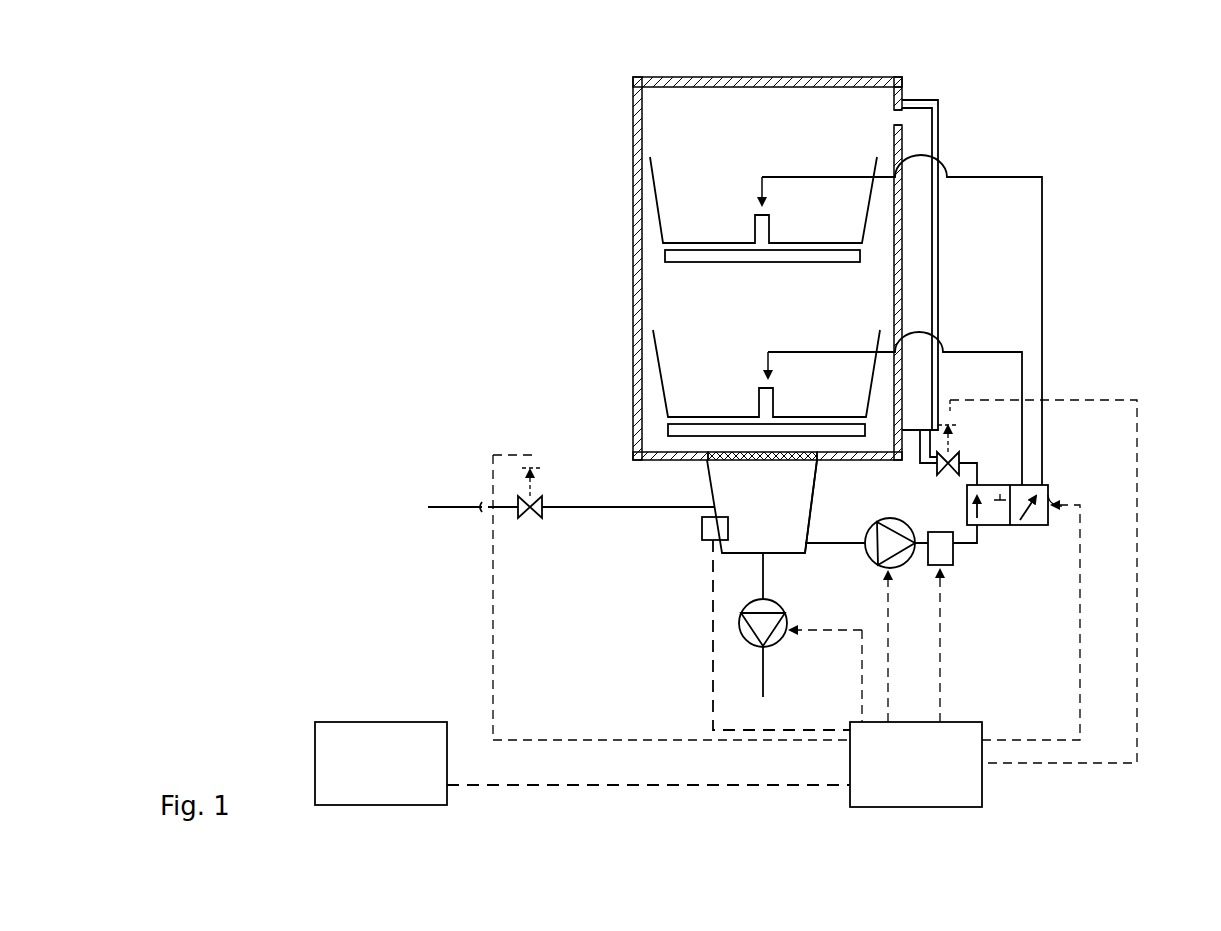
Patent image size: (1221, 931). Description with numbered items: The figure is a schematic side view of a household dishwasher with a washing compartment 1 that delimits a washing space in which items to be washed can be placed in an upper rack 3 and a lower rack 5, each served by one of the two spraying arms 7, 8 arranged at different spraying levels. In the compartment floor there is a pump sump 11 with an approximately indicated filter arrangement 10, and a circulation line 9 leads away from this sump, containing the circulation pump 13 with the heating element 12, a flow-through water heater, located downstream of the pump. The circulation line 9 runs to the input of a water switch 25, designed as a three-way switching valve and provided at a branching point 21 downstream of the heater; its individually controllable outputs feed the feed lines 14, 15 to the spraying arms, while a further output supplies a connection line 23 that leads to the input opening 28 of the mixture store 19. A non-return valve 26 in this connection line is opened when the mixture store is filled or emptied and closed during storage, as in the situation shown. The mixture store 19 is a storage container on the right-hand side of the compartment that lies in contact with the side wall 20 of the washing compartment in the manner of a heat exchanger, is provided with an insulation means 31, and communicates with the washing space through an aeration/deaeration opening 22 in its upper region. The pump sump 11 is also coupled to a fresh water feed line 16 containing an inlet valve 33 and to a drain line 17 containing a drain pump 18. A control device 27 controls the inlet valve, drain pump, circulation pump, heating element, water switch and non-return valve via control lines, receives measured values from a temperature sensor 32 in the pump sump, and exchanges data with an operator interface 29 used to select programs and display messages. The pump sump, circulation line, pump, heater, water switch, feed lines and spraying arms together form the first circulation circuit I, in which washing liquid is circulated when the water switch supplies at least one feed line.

The washing compartment 1 is at (748, 77).
The rack 3 is at (660, 176).
The rack 5 is at (660, 348).
The spraying arm 7 is at (727, 263).
The spraying arm 8 is at (717, 430).
The circulation line 9 is at (830, 545).
The filter arrangement 10 is at (765, 462).
The pump sump 11 is at (813, 478).
The heating element 12 is at (945, 568).
The circulation pump 13 is at (897, 569).
The feed line 14 is at (948, 180).
The feed line 15 is at (962, 355).
The fresh water feed line 16 is at (660, 510).
The drain line 17 is at (765, 665).
The drain pump 18 is at (788, 620).
The mixture store 19 is at (936, 118).
The side wall 20 is at (903, 90).
The branching point 21 is at (1068, 462).
The aeration/deaeration opening 22 is at (896, 118).
The connection line 23 is at (972, 462).
The water switch 25 is at (1050, 490).
The non-return valve 26 is at (947, 476).
The control device 27 is at (916, 764).
The input opening 28 is at (918, 440).
The operator interface 29 is at (582, 763).
The insulation means 31 is at (940, 302).
The temperature sensor 32 is at (697, 540).
The inlet valve 33 is at (531, 520).
The first circulation circuit I is at (1058, 192).